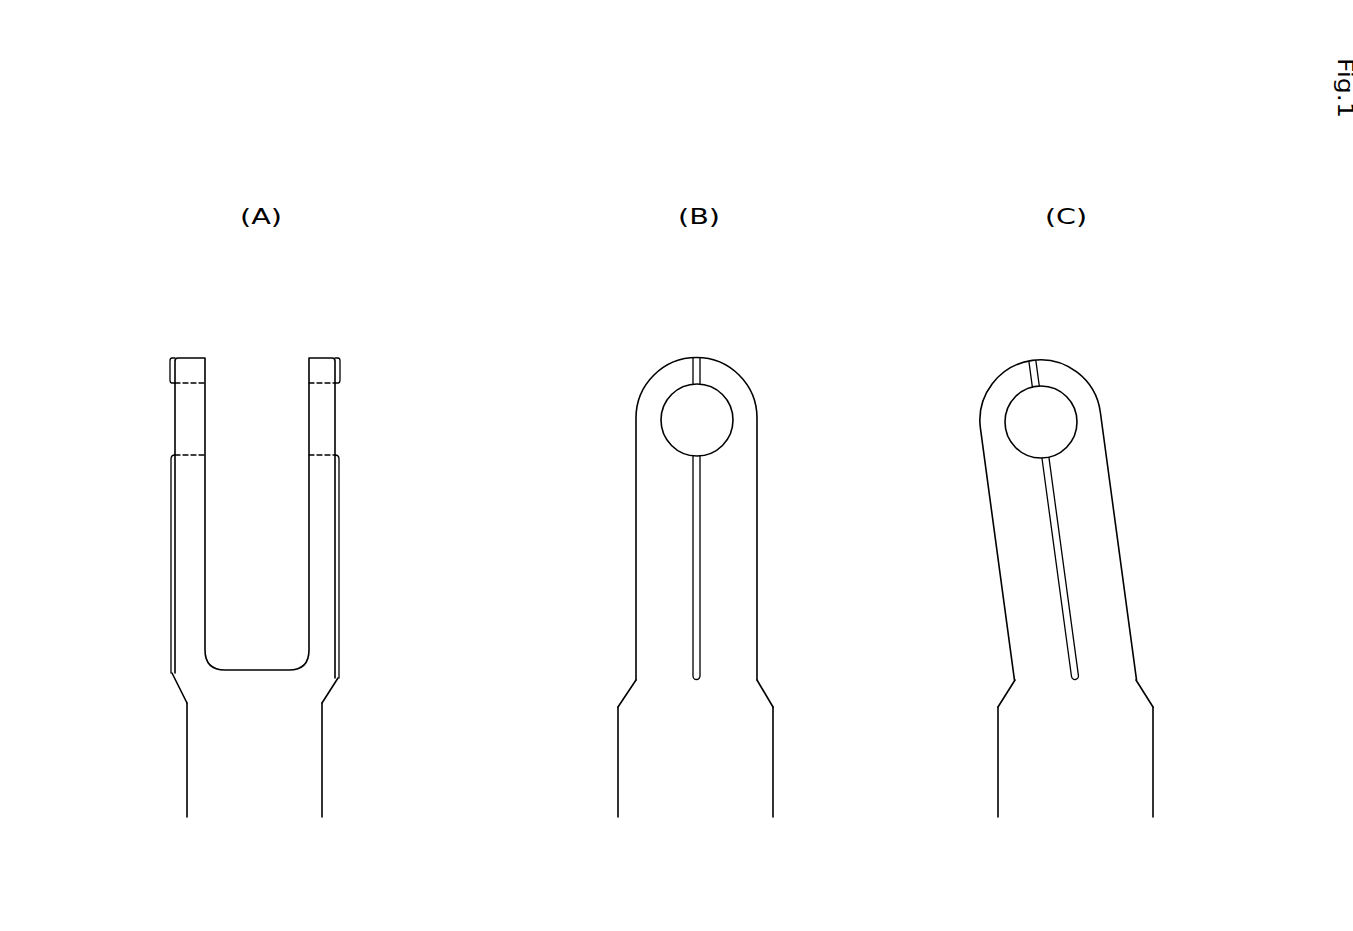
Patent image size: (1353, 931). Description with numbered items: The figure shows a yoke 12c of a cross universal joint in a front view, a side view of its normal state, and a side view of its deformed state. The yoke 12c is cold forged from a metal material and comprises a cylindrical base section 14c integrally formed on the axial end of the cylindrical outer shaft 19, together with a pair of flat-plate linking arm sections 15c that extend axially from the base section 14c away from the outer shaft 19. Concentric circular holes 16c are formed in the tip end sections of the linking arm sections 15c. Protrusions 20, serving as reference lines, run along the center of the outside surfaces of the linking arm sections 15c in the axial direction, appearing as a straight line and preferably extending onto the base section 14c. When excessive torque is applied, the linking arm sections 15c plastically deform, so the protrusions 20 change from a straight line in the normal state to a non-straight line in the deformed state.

In FIG. 1A, the yoke 12c is at (323, 570).
In FIG. 1B, the yoke 12c is at (648, 583).
In FIG. 1C, the yoke 12c is at (1020, 584).
In FIG. 1A, the base section 14c is at (287, 687).
In FIG. 1B, the base section 14c is at (740, 700).
In FIG. 1C, the base section 14c is at (1100, 700).
In FIG. 1A, the linking arm sections 15c is at (197, 372).
In FIG. 1B, the linking arm sections 15c is at (737, 537).
In FIG. 1C, the linking arm sections 15c is at (1097, 537).
In FIG. 1A, the circular holes 16c is at (333, 403).
In FIG. 1B, the circular holes 16c is at (713, 390).
In FIG. 1C, the circular holes 16c is at (1063, 442).
In FIG. 1A, the outer shaft 19 is at (312, 782).
In FIG. 1B, the outer shaft 19 is at (755, 795).
In FIG. 1C, the outer shaft 19 is at (1115, 797).
In FIG. 1A, the protrusions 20 is at (338, 498).
In FIG. 1B, the protrusions 20 is at (697, 602).
In FIG. 1C, the protrusions 20 is at (1068, 603).